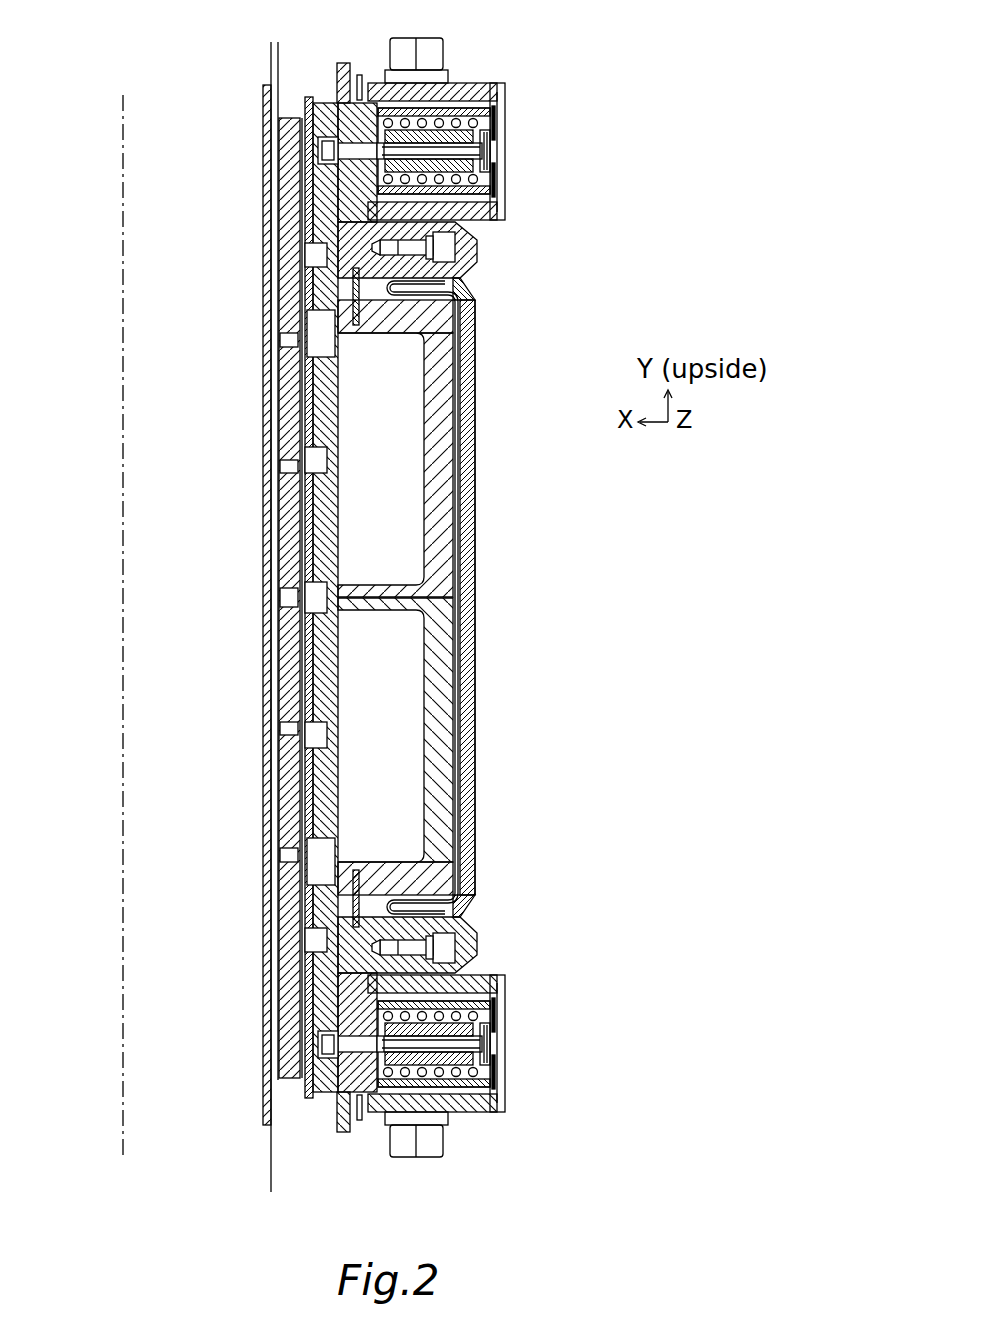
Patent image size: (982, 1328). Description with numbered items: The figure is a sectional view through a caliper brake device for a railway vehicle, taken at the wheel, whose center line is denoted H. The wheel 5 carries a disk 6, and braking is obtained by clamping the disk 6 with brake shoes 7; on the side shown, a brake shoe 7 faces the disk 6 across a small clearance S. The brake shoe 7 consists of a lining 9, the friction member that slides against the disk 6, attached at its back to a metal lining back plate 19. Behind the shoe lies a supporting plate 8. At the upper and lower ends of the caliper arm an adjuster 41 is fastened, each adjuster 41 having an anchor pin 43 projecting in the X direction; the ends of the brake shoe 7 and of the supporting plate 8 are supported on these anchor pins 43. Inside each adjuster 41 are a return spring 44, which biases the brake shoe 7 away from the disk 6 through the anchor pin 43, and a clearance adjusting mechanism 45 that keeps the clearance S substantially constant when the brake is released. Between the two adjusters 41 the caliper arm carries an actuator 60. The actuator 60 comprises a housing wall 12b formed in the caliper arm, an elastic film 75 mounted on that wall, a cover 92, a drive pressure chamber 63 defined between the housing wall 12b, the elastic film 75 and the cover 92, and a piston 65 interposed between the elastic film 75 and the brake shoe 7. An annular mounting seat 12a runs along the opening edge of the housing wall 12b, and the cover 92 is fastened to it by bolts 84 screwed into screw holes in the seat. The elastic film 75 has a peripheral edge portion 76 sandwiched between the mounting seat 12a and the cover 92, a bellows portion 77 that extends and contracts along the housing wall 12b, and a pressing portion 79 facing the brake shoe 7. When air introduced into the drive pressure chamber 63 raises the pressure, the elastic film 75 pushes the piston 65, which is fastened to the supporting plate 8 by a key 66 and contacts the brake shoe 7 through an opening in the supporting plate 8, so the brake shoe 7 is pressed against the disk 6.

The center line of wheel H is at (122, 98).
The clearance S is at (250, 52).
The wheel 5 is at (266, 1124).
The disk 6 is at (278, 84).
The brake shoe 7 is at (306, 1100).
The supporting plate 8 is at (323, 914).
The lining 9 is at (284, 491).
The lining back plate 19 is at (322, 803).
The adjuster 41 is at (508, 80).
The anchor pin 43 is at (462, 100).
The return spring 44 is at (462, 182).
The clearance adjusting mechanism 45 is at (492, 132).
The actuator 60 is at (478, 784).
The drive pressure chamber 63 is at (452, 553).
The piston 65 is at (437, 715).
The key 66 is at (368, 313).
The elastic film 75 is at (400, 282).
The bellows portion 77 is at (378, 907).
The pressing portion 79 is at (457, 494).
The bolt 84 is at (458, 241).
The peripheral edge portion 76 is at (446, 946).
The cover 92 is at (468, 357).
The mounting seat 12a is at (472, 922).
The housing wall 12b is at (472, 286).